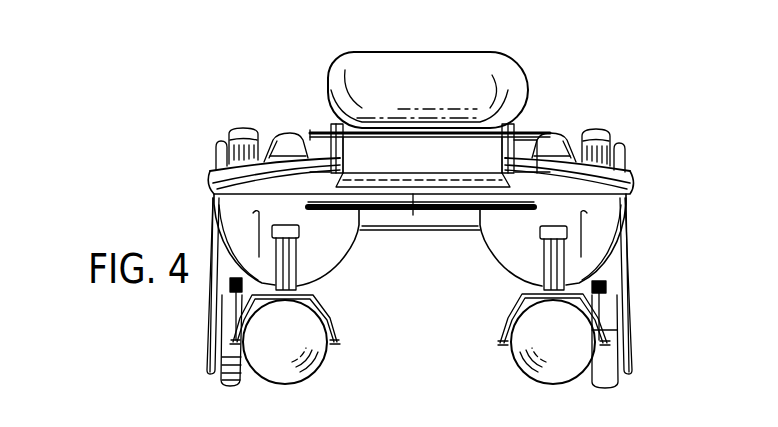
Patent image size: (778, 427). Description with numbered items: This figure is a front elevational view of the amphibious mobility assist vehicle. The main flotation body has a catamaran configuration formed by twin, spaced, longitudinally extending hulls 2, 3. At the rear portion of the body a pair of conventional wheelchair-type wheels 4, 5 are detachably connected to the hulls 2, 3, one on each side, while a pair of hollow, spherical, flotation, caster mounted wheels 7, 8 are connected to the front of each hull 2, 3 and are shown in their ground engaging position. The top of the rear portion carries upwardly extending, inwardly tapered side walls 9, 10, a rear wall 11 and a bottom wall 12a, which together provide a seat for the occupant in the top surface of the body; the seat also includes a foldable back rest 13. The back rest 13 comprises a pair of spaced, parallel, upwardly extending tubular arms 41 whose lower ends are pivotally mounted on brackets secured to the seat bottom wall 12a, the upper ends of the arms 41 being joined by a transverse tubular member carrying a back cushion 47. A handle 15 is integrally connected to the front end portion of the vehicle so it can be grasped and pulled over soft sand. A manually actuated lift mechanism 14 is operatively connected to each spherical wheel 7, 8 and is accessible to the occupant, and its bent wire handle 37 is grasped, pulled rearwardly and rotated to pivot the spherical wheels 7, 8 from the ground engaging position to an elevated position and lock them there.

The hull 2 is at (595, 223).
The hull 3 is at (333, 248).
The wheelchair-type wheel 4 is at (622, 146).
The wheelchair-type wheel 5 is at (222, 143).
The spherical flotation caster mounted wheel 7 is at (550, 372).
The spherical flotation caster mounted wheel 8 is at (312, 348).
The side wall 9 is at (556, 136).
The side wall 10 is at (291, 136).
The rear wall 11 is at (527, 134).
The bottom wall 12a is at (450, 230).
The foldable back rest 13 is at (309, 62).
The lift mechanism 14 is at (215, 318).
The handle 15 is at (410, 212).
The bent wire handle 37 is at (210, 296).
The tubular arm 41 is at (343, 148).
The back cushion 47 is at (477, 64).